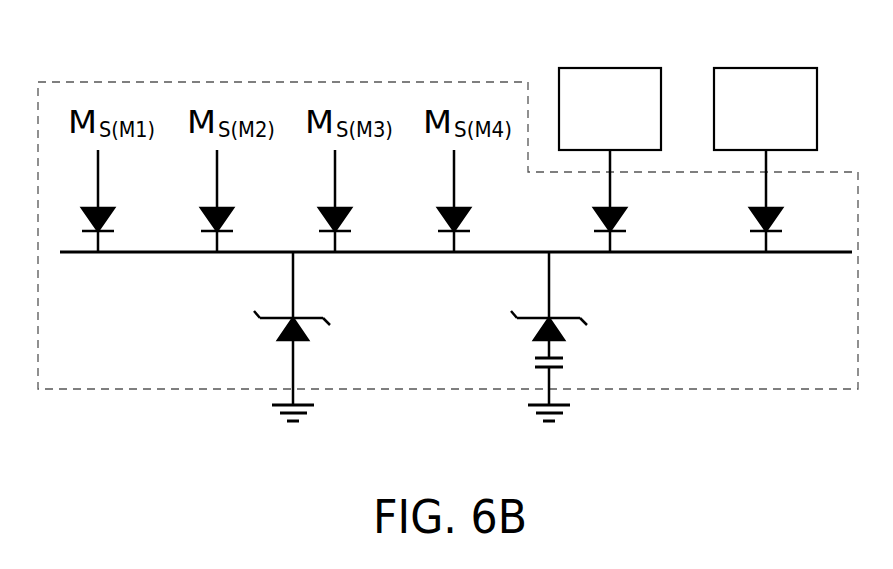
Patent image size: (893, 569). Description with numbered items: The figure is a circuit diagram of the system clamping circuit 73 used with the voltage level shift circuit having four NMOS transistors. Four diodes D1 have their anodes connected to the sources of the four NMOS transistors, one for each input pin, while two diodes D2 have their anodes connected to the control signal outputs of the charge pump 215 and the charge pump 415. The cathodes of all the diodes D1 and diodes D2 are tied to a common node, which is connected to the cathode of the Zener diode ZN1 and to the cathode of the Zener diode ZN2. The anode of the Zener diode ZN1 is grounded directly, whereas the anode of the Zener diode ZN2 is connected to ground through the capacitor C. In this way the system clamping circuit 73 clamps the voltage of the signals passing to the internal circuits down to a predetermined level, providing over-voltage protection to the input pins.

The system clamping circuit 73 is at (289, 80).
The charge pump 215 is at (606, 66).
The charge pump 415 is at (762, 66).
The diode D1 is at (491, 215).
The diode D2 is at (803, 215).
The Zener diode ZN1 is at (308, 330).
The Zener diode ZN2 is at (566, 330).
The capacitor C is at (563, 362).